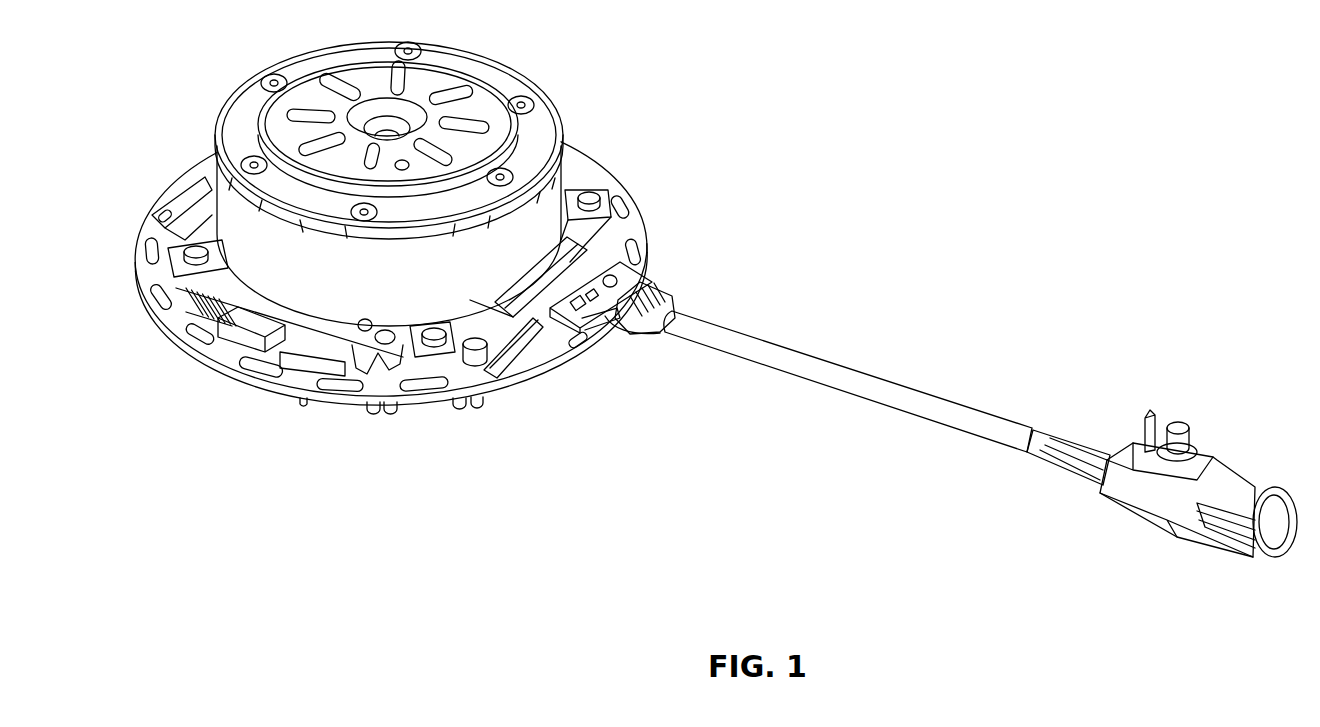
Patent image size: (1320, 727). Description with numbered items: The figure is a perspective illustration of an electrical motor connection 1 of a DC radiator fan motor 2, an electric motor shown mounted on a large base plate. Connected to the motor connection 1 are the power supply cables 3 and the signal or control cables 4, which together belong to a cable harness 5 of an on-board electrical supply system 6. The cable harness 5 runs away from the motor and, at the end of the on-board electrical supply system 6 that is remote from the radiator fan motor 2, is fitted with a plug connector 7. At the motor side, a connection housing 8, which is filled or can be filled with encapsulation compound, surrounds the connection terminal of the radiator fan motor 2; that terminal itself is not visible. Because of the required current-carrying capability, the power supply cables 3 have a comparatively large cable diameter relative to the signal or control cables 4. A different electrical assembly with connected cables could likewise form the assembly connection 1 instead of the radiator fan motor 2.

The electrical motor connection 1 is at (689, 227).
The radiator fan motor 2 is at (510, 92).
The power supply cables 3 is at (668, 303).
The signal or control cables 4 is at (662, 291).
The cable harness 5 is at (1053, 434).
The on-board electrical supply system 6 is at (890, 398).
The plug connector 7 is at (1180, 513).
The connection housing 8 is at (606, 327).